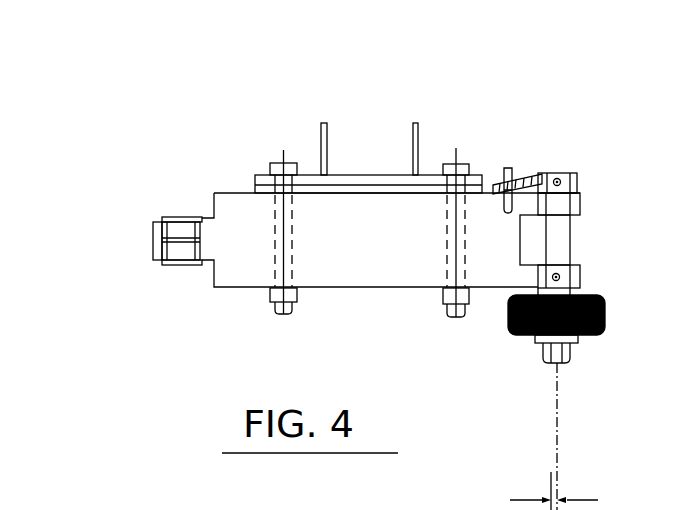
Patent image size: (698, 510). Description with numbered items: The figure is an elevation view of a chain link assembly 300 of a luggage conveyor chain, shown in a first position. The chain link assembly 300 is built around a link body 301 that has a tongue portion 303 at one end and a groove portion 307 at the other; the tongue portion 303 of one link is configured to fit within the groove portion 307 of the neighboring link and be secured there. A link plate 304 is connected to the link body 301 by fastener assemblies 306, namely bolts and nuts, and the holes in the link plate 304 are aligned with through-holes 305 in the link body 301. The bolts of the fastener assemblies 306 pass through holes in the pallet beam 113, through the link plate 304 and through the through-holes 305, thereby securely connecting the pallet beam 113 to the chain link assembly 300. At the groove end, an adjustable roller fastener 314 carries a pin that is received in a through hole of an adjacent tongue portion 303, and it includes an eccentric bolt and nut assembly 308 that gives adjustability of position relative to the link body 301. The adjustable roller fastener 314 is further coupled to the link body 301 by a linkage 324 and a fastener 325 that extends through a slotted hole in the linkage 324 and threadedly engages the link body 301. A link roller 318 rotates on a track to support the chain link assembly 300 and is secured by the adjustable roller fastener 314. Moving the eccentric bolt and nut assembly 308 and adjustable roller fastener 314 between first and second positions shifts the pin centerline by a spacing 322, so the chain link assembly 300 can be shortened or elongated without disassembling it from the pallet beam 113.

The chain link assembly 300 is at (376, 100).
The link body 301 is at (231, 193).
The tongue portion 303 is at (153, 238).
The link plate 304 is at (479, 174).
The pallet beam 113 is at (421, 124).
The through-holes 305 is at (292, 243).
The fastener assemblies 306 is at (296, 318).
The groove portion 307 is at (520, 240).
The eccentric bolt and nut assembly 308 is at (543, 164).
The fastener 325 is at (508, 170).
The linkage 324 is at (527, 175).
The link roller 318 is at (597, 333).
The adjustable roller fastener 314 is at (562, 375).
The spacing 322 is at (217, 118).